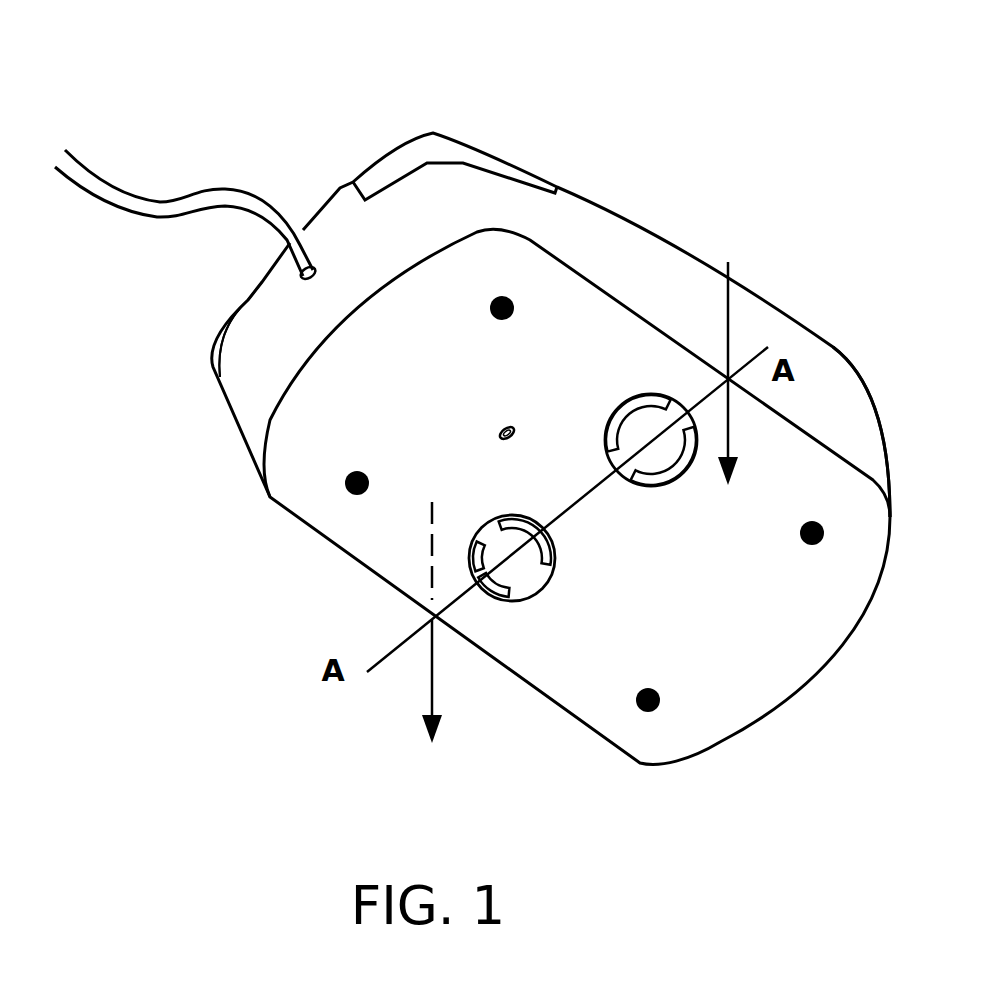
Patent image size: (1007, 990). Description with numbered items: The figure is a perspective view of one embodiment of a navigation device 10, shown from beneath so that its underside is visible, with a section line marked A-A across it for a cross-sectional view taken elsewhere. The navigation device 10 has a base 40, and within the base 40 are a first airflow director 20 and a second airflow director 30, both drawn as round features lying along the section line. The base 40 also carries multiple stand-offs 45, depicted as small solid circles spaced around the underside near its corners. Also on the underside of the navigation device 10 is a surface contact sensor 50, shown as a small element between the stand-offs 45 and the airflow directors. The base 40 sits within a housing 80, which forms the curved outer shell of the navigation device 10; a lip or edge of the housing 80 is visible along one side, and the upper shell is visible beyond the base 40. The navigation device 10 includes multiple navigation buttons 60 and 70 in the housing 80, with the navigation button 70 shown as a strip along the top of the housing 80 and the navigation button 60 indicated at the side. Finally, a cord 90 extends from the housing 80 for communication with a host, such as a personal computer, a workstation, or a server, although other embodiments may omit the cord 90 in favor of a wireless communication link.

The navigation device 10 is at (742, 130).
The first airflow director 20 is at (535, 595).
The second airflow director 30 is at (657, 484).
The base 40 is at (790, 658).
The stand-offs 45 is at (492, 302).
The surface contact sensor 50 is at (498, 433).
The navigation button 60 is at (248, 302).
The navigation button 70 is at (402, 153).
The housing 80 is at (833, 347).
The cord 90 is at (157, 200).